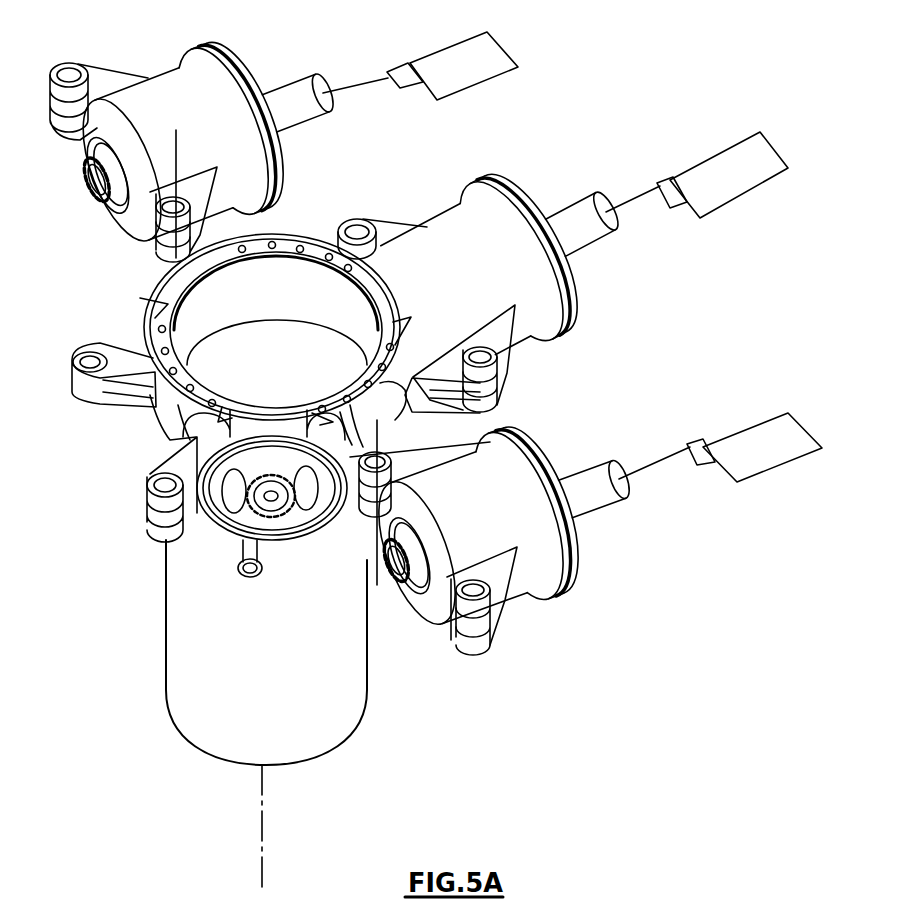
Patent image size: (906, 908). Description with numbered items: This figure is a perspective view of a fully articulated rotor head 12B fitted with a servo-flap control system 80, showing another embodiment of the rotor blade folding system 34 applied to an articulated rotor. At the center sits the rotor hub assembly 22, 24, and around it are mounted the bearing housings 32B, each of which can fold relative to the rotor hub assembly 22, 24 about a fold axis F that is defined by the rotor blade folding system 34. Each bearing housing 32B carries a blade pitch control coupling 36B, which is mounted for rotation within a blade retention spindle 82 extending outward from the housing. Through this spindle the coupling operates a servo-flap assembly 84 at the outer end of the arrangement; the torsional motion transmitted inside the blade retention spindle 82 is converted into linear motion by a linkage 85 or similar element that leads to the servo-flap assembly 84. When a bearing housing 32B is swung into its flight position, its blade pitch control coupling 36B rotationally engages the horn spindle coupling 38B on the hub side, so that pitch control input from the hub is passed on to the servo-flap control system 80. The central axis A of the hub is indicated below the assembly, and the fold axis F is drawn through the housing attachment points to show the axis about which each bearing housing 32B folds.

The fluid control assembly 12B is at (426, 453).
The rotor hub assembly 22 is at (272, 388).
The rotor hub assembly 24 is at (163, 425).
The bearing housing 32B is at (453, 223).
The bowl 34 is at (166, 573).
The blade pitch control coupling 36B is at (95, 186).
The horn spindle coupling 38B is at (272, 506).
The servo-flap control system 80 is at (572, 257).
The blade retention spindle 82 is at (317, 117).
The servo-flap assembly 84 is at (745, 145).
The linkage 85 is at (666, 182).
The fold axis F is at (180, 157).
The central axis A is at (265, 852).